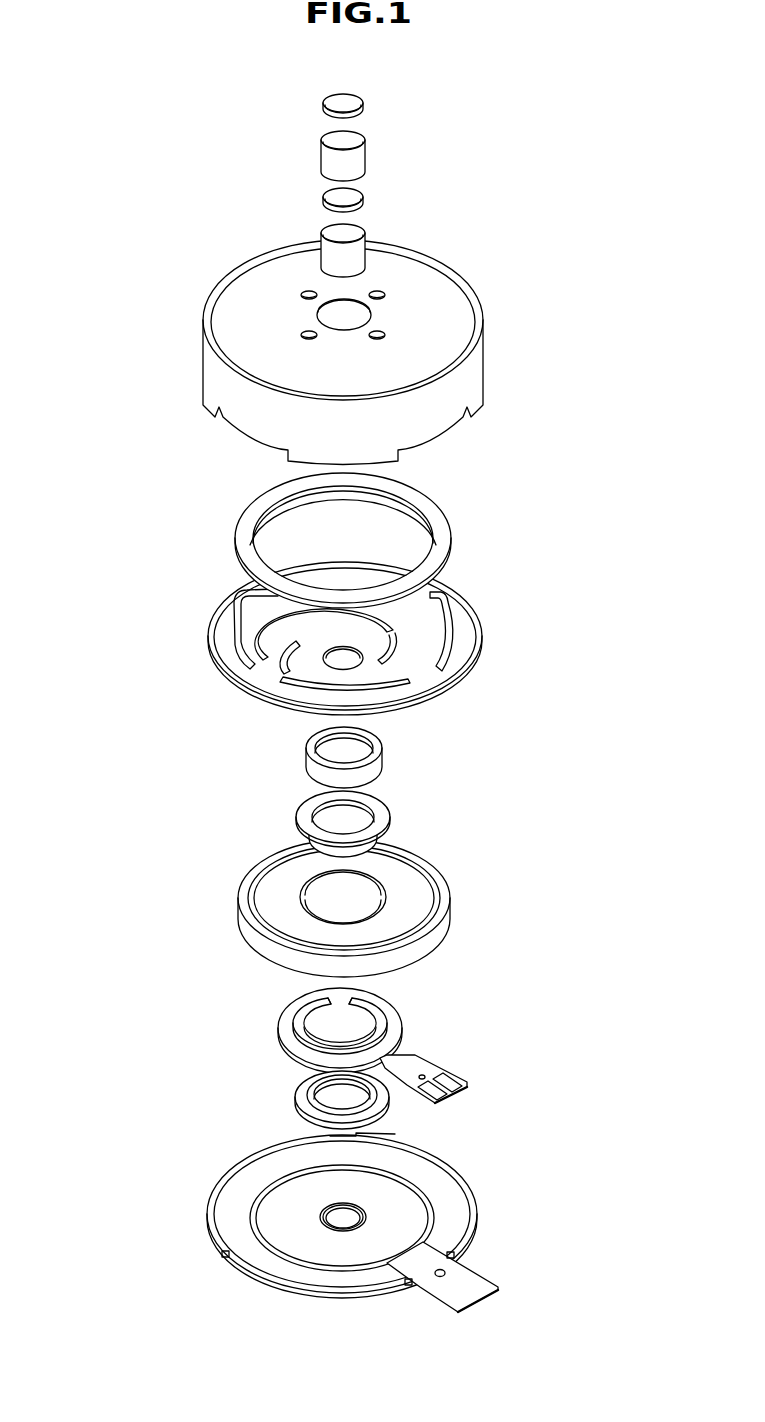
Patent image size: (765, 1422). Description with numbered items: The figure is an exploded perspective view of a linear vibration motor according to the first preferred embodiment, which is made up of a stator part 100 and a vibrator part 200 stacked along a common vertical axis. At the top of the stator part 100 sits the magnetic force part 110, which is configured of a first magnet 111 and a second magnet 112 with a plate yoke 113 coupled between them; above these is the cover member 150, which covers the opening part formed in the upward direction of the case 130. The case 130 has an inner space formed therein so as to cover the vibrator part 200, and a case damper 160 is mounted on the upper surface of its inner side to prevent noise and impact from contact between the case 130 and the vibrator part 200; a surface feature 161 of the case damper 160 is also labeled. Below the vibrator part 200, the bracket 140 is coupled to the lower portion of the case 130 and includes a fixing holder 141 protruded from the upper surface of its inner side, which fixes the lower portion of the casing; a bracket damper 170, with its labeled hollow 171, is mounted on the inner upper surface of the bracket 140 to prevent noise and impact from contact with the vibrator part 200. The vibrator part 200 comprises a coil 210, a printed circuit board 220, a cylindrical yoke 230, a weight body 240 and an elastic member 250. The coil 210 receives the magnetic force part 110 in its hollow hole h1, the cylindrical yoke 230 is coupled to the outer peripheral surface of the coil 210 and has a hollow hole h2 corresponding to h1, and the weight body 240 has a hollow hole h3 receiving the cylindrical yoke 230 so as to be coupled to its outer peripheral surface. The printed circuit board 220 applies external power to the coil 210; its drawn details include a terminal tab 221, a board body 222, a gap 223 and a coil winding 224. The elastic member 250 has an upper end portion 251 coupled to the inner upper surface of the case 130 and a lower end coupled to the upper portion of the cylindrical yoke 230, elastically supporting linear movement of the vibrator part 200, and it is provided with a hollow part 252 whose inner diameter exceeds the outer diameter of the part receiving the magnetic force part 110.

The stator part 100 is at (112, 101).
The magnetic force part 110 is at (543, 152).
The first magnet 111 is at (362, 155).
The second magnet 112 is at (365, 249).
The plate yoke 113 is at (363, 202).
The case 130 is at (216, 357).
The bracket 140 is at (222, 1191).
The fixing holder 141 is at (366, 1211).
The cover member 150 is at (327, 101).
The case damper 160 is at (250, 530).
The ring surface 161 is at (364, 511).
The bracket damper 170 is at (298, 1098).
The damper hole 171 is at (342, 1101).
The vibrator part 200 is at (598, 742).
The coil 210 is at (378, 762).
The printed circuit board 220 is at (536, 972).
The terminal portion 221 is at (435, 1070).
The board body 222 is at (308, 1060).
The coil gap 223 is at (356, 995).
The coil 224 is at (352, 1023).
The cylindrical yoke 230 is at (382, 821).
The weight body 240 is at (438, 901).
The elastic member 250 is at (492, 638).
The upper end portion 251 is at (453, 606).
The hollow part 252 is at (348, 660).
The hollow hole h1 is at (352, 747).
The hollow hole h2 is at (352, 820).
The hollow hole h3 is at (348, 903).